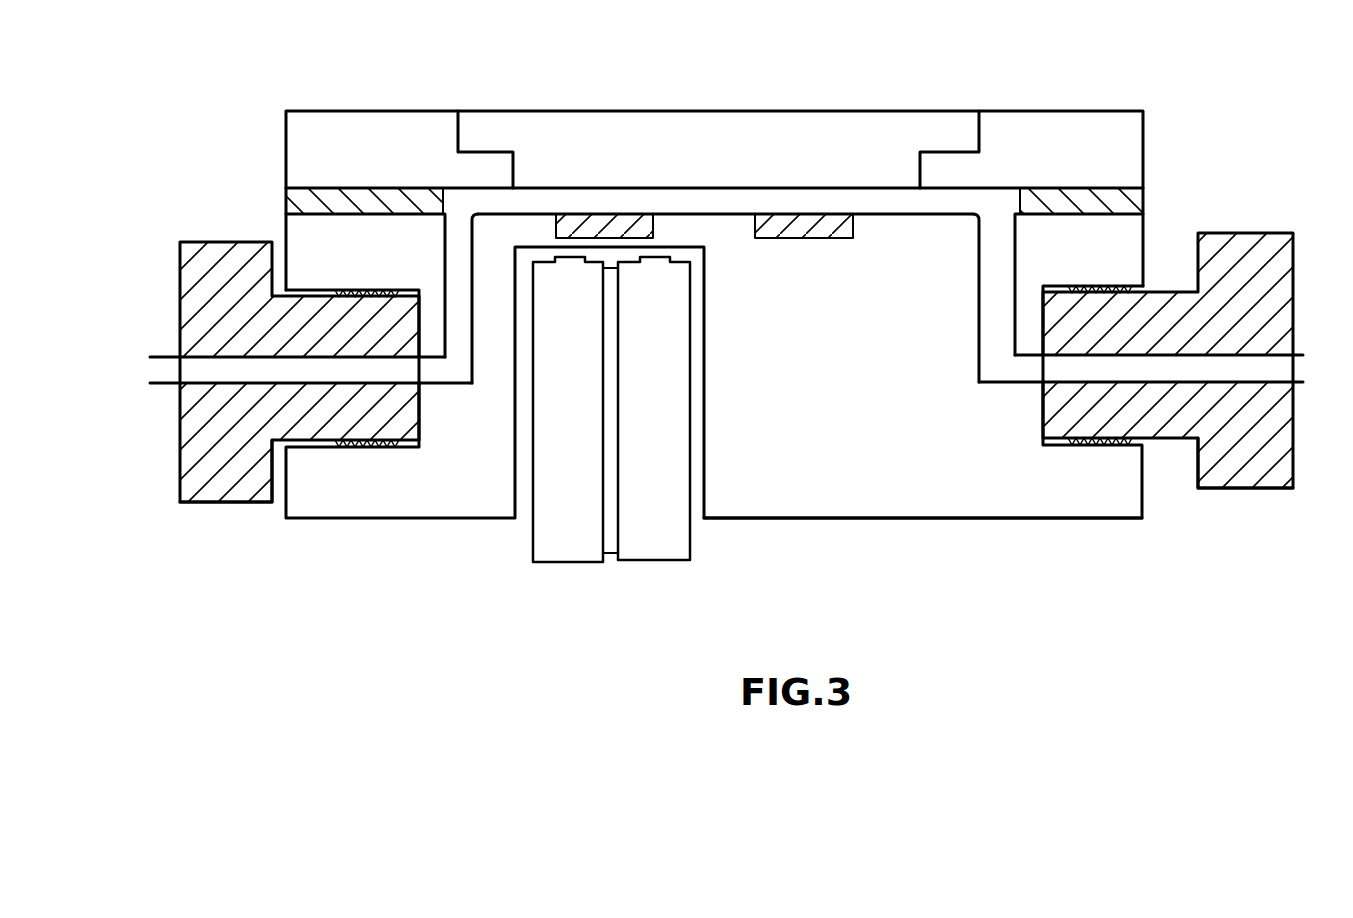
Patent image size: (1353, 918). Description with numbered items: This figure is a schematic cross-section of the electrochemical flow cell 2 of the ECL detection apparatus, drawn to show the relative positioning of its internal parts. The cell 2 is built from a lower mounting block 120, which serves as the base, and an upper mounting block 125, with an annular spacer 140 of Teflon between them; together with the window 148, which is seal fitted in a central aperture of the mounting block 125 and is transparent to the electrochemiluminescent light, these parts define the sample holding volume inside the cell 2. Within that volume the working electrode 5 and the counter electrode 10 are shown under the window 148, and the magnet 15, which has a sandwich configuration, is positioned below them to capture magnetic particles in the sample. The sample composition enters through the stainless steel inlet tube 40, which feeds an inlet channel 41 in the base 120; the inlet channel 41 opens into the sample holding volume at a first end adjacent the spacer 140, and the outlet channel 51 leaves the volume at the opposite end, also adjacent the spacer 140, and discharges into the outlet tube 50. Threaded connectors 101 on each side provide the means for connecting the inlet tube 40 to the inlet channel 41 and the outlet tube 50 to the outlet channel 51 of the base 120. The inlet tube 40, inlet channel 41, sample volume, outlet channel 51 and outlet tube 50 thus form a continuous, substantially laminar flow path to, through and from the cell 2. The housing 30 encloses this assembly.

The cell 2 is at (843, 431).
The working electrode 5 is at (575, 220).
The counter electrode 10 is at (812, 242).
The magnet 15 is at (651, 605).
The housing 30 is at (895, 198).
The inlet tube 40 is at (207, 375).
The inlet channel 41 is at (463, 387).
The outlet tube 50 is at (1248, 372).
The outlet channel 51 is at (988, 347).
The connectors 101 is at (233, 492).
The mounting block 120 is at (1013, 500).
The mounting block 125 is at (1135, 156).
The annular spacer 140 is at (1143, 193).
The window 148 is at (793, 123).